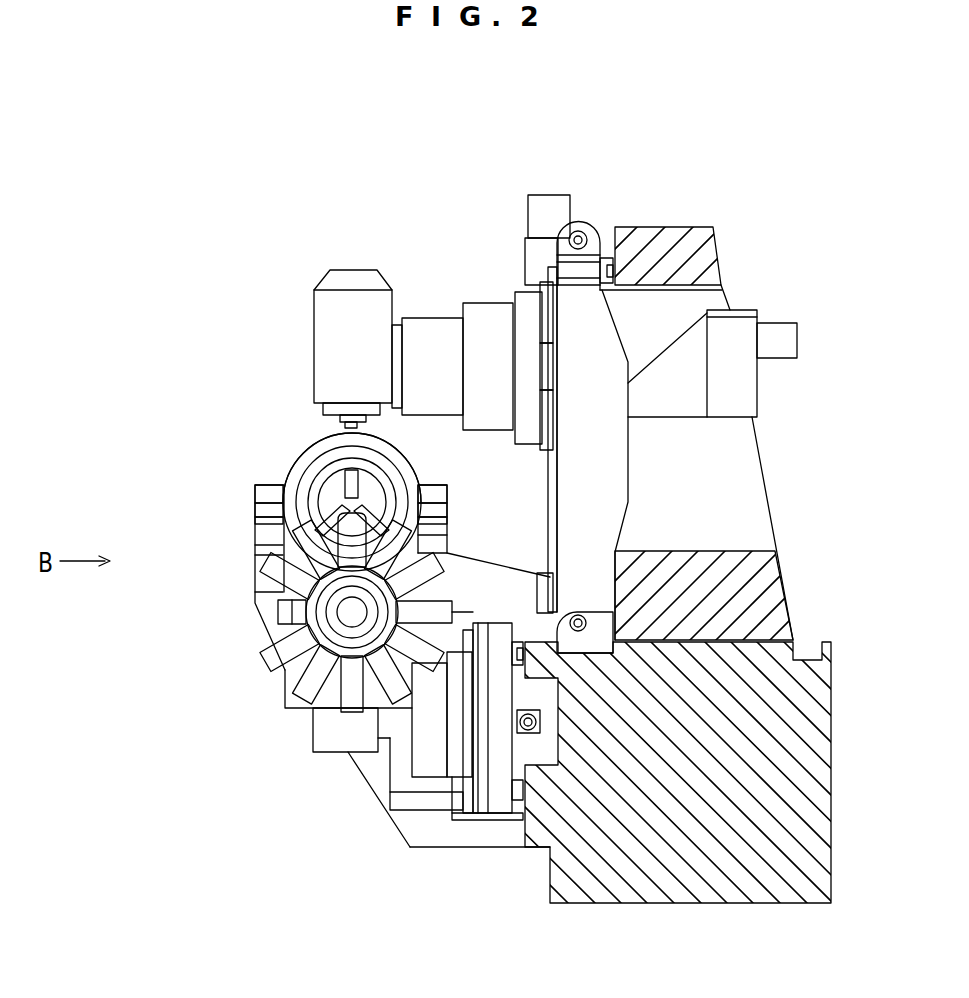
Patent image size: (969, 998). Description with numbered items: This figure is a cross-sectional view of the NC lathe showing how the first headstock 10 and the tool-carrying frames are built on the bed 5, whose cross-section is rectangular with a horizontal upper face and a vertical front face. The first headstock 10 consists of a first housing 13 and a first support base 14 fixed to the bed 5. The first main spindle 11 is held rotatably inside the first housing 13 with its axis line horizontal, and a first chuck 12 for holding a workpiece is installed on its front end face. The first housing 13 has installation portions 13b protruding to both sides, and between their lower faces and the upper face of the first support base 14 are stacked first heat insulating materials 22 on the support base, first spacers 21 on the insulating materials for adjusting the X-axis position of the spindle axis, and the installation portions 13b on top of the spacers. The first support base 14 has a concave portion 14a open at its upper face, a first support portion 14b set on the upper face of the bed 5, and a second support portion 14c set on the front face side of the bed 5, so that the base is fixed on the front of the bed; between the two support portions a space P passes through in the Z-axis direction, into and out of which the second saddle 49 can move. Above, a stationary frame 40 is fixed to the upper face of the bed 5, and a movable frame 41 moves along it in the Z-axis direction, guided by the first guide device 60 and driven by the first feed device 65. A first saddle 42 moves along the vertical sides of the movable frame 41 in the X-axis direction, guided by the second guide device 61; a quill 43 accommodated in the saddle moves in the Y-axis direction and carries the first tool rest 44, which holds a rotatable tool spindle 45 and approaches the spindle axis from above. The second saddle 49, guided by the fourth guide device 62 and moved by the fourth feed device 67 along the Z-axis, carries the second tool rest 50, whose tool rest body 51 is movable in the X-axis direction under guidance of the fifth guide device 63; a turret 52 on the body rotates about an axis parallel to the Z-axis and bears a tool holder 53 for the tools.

The bed 5 is at (833, 693).
The first headstock 10 is at (218, 553).
The first main spindle 11 is at (322, 488).
The first chuck 12 is at (330, 495).
The first housing 13 is at (390, 445).
The installation portions 13b is at (262, 493).
The first support base 14 is at (262, 568).
The concave portion 14a is at (293, 555).
The first support portion 14b is at (482, 610).
The second support portion 14c is at (507, 840).
The first spacers 21 is at (262, 515).
The first heat insulating materials 22 is at (262, 523).
The stationary frame 40 is at (713, 250).
The movable frame 41 is at (622, 462).
The first saddle 42 is at (496, 308).
The quill 43 is at (420, 325).
The first tool rest 44 is at (318, 345).
The tool spindle 45 is at (343, 425).
The second saddle 49 is at (493, 810).
The second tool rest 50 is at (298, 726).
The tool rest body 51 is at (282, 703).
The turret 52 is at (303, 613).
The tool holder 53 is at (273, 658).
The first guide device 60 is at (608, 238).
The second guide device 61 is at (566, 415).
The fourth guide device 62 is at (531, 804).
The fifth guide device 63 is at (462, 826).
The first feed device 65 is at (577, 218).
The fourth feed device 67 is at (538, 743).
The space P is at (600, 550).